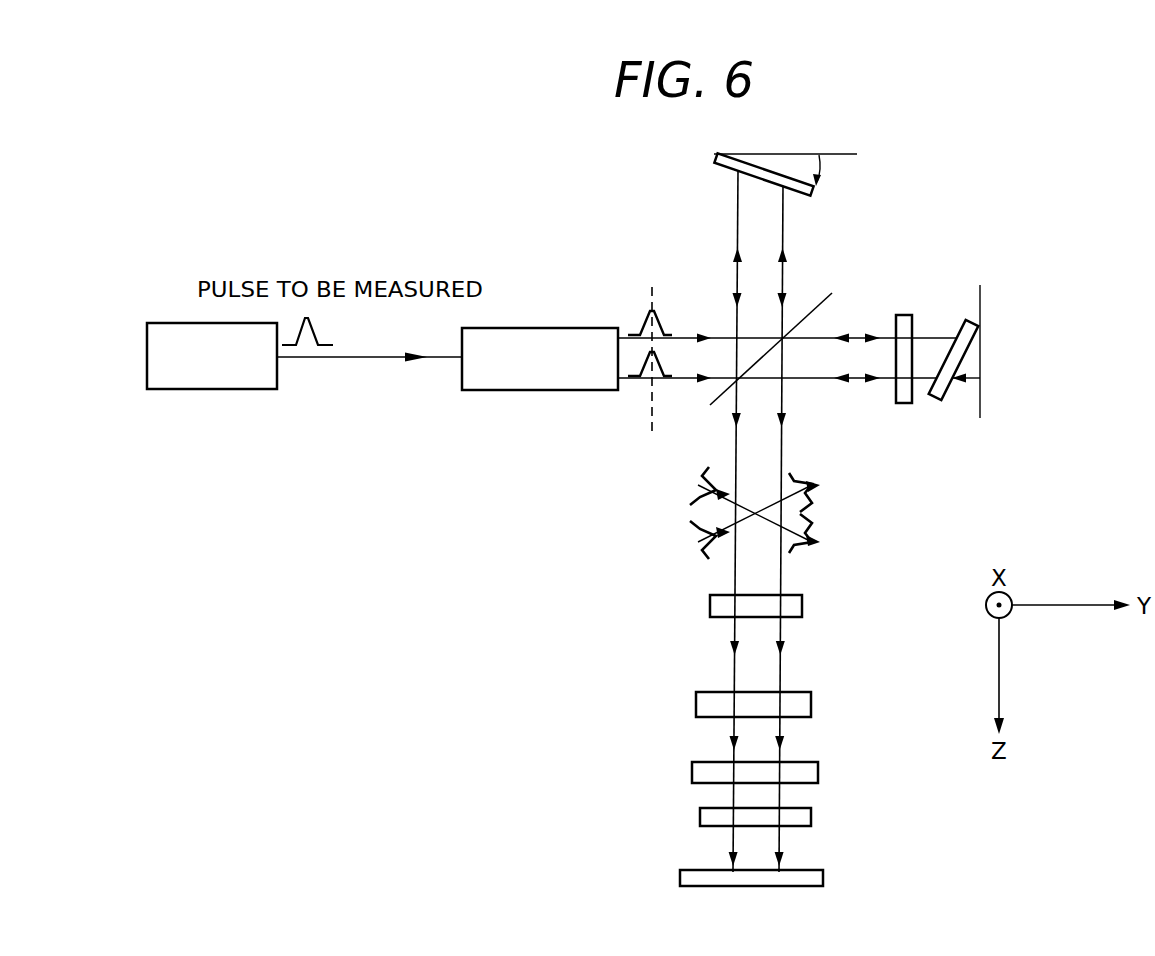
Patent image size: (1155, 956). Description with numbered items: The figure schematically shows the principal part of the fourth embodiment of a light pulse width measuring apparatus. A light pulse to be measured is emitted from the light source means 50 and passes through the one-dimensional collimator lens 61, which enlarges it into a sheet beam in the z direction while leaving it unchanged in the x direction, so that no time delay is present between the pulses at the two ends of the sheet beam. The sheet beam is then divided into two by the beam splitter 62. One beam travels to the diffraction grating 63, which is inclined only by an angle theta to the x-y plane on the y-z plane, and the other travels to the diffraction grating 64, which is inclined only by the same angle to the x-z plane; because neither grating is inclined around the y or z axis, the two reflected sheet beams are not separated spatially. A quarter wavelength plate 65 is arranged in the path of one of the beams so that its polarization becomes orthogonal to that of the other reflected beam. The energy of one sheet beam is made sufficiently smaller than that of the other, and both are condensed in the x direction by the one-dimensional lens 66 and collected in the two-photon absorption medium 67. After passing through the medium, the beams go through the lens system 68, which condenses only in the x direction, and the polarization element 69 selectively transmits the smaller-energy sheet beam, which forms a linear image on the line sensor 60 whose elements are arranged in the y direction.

The light source means 50 is at (180, 389).
The one-dimensional collimator lens 61 is at (482, 390).
The beam splitter 62 is at (826, 297).
The diffraction grating 63 is at (731, 164).
The diffraction grating 64 is at (968, 327).
The quarter wavelength plate 65 is at (904, 398).
The one-dimensional lens 66 is at (710, 609).
The two-photon absorption medium 67 is at (696, 708).
The lens system 68 is at (692, 773).
The polarization element 69 is at (811, 815).
The line sensor 60 is at (823, 882).